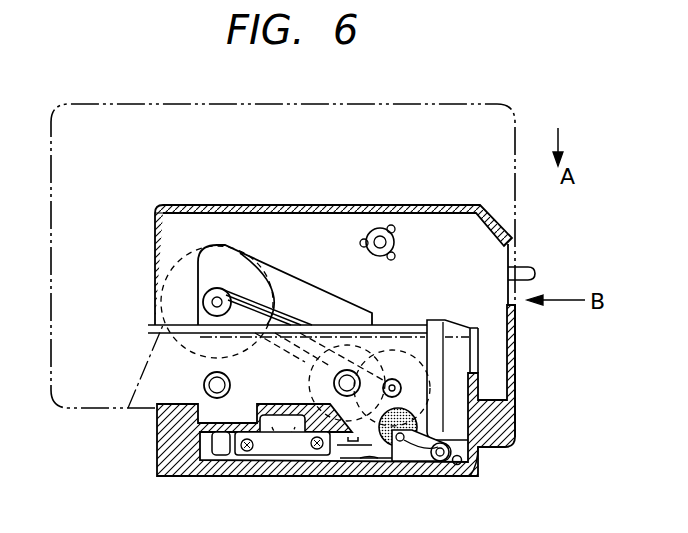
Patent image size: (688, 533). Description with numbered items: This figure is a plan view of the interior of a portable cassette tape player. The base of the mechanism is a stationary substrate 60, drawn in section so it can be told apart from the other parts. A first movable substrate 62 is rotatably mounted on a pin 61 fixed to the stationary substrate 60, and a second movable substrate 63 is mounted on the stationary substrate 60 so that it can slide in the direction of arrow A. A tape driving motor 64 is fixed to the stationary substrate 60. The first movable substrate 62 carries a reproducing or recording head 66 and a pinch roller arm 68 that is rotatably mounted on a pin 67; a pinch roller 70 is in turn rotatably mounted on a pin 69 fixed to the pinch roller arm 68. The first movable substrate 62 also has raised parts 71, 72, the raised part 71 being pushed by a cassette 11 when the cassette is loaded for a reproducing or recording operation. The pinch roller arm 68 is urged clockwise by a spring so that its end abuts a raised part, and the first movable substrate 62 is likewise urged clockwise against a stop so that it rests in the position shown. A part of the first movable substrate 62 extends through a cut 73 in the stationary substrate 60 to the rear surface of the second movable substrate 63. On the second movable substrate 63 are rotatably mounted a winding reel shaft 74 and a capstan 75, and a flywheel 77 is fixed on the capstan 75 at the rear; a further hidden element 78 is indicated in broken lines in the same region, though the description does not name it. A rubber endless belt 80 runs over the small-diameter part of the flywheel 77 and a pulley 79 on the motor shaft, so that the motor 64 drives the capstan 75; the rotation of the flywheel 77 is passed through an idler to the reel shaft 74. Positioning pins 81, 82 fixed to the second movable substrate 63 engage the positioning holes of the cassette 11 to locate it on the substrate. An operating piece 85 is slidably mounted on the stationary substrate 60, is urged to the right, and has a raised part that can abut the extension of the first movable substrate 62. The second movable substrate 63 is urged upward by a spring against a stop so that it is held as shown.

The cassette 11 is at (514, 124).
The stationary substrate 60 is at (157, 450).
The pin 61 is at (466, 466).
The first movable substrate 62 is at (338, 457).
The second movable substrate 63 is at (452, 218).
The tape driving motor 64 is at (258, 277).
The reproducing head 66 is at (280, 445).
The pin 67 is at (472, 453).
The pinch roller arm 68 is at (440, 478).
The pin 69 is at (423, 455).
The pinch roller 70 is at (395, 472).
The raised part 71 is at (227, 455).
The raised part 72 is at (367, 458).
The cut 73 is at (475, 350).
The winding reel shaft 74 is at (376, 228).
The capstan 75 is at (401, 388).
The flywheel 77 is at (405, 348).
The gear 78 is at (388, 330).
The pulley 79 is at (219, 290).
The rubber endless belt 80 is at (298, 320).
The positioning pin 81 is at (204, 385).
The positioning pin 82 is at (334, 383).
The operating piece 85 is at (530, 268).